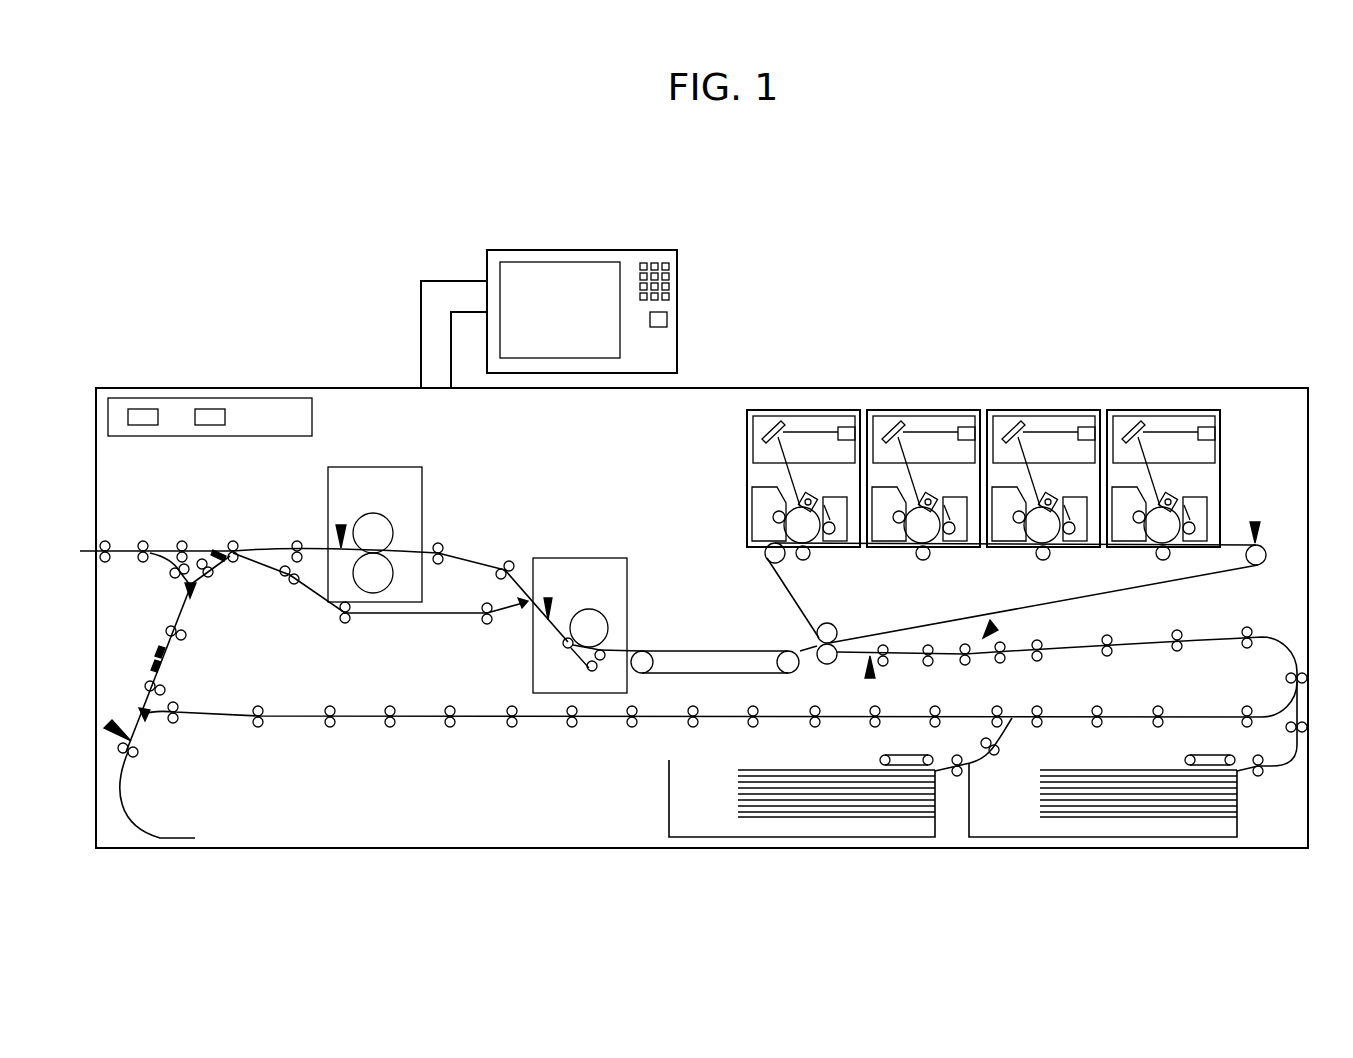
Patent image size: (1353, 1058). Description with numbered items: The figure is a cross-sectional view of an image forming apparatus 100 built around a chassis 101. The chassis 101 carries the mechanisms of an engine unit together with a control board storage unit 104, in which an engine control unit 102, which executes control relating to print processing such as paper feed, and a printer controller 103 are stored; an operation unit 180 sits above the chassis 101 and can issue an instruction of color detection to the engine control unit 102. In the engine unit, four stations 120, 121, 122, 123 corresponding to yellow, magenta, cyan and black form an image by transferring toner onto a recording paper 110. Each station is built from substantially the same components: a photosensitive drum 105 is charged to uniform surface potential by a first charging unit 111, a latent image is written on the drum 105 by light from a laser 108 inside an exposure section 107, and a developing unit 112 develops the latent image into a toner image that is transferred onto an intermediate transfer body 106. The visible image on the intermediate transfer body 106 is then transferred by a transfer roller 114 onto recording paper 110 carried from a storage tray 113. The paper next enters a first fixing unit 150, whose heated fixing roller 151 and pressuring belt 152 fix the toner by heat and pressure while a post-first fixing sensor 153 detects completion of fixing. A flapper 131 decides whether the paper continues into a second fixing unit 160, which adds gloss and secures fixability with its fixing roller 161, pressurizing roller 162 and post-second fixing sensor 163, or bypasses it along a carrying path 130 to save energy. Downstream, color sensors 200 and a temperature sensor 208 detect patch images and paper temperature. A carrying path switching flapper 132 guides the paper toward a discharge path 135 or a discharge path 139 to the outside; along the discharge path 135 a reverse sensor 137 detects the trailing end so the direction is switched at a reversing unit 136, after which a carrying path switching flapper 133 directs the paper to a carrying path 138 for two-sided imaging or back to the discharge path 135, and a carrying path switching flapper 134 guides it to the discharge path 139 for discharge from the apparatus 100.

The image forming apparatus 100 is at (1230, 290).
The chassis 101 is at (1270, 386).
The engine control unit 102 is at (141, 409).
The printer controller 103 is at (209, 409).
The control board storage unit 104 is at (276, 398).
The photosensitive drum 105 is at (810, 558).
The intermediate transfer body 106 is at (887, 627).
The exposure unit 107 is at (807, 415).
The laser 108 is at (848, 427).
The recording paper 110 is at (789, 770).
The first charging unit 111 is at (815, 497).
The developing unit 112 is at (760, 518).
The storage tray 113 is at (946, 777).
The transfer roller 114 is at (828, 666).
The station 120 is at (776, 461).
The station 121 is at (918, 411).
The station 122 is at (1036, 411).
The station 123 is at (1153, 411).
The carrying path 130 is at (386, 622).
The flapper 131 is at (520, 612).
The carrying path switching flapper 132 is at (222, 547).
The carrying path switching flapper 133 is at (154, 722).
The carrying path switching flapper 134 is at (195, 597).
The discharge path 135 is at (180, 642).
The reversing unit 136 is at (140, 822).
The reverse sensor 137 is at (124, 730).
The carrying path 138 is at (300, 713).
The discharge path 139 is at (124, 546).
The first fixing unit 150 is at (559, 606).
The fixing roller 151 is at (592, 609).
The pressuring belt 152 is at (575, 658).
The post-first fixing sensor 153 is at (548, 596).
The second fixing unit 160 is at (375, 511).
The fixing roller 161 is at (365, 513).
The pressurizing roller 162 is at (393, 574).
The post-second fixing sensor 163 is at (333, 522).
The operation unit 180 is at (487, 257).
The color sensor 200 is at (162, 645).
The temperature sensor 208 is at (153, 665).